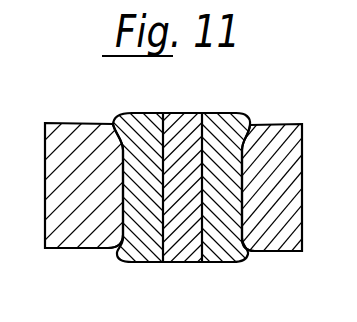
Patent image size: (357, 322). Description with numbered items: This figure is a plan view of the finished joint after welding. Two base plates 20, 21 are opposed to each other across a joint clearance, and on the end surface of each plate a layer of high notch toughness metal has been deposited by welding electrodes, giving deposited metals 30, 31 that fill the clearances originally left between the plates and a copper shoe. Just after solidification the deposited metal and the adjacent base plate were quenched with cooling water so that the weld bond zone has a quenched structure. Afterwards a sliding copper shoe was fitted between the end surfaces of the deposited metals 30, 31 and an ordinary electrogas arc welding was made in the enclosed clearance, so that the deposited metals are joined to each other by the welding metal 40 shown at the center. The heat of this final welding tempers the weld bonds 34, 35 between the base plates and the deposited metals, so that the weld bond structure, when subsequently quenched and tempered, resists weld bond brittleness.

The base plate 20 is at (67, 132).
The base plate 21 is at (271, 137).
The deposited metal 30 is at (147, 118).
The deposited metal 31 is at (223, 122).
The welding metal 40 is at (181, 130).
The weld bond 34 is at (96, 247).
The weld bond 35 is at (242, 213).